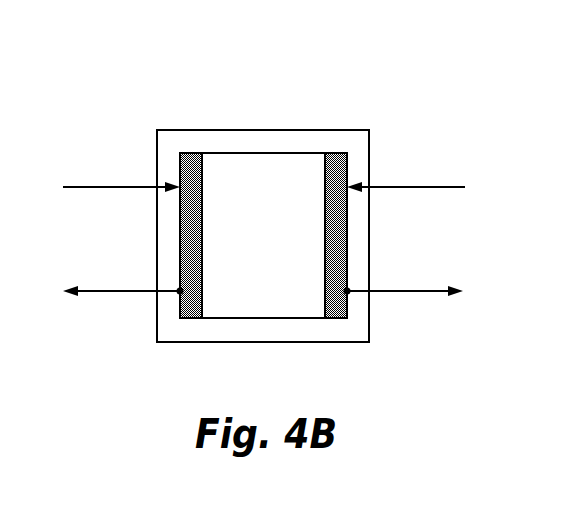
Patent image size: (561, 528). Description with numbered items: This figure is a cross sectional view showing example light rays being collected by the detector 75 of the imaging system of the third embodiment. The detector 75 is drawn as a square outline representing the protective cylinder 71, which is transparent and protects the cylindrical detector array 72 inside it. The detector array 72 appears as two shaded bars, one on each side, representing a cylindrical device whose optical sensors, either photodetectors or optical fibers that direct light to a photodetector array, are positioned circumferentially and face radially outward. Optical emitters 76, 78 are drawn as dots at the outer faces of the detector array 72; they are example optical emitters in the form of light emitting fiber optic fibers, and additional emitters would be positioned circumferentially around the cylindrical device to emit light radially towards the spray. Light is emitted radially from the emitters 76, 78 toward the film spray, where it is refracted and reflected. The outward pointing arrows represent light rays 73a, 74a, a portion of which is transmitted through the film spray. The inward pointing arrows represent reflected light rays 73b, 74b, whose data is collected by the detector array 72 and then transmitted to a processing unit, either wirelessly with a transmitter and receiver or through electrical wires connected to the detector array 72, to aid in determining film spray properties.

The protective cylinder 71 is at (369, 332).
The cylindrical detector array 72 is at (190, 167).
The light ray 73a is at (410, 292).
The light ray 73b is at (416, 186).
The light ray 74a is at (110, 292).
The light ray 74b is at (108, 186).
The detector 75 is at (263, 80).
The optical emitter 76 is at (350, 289).
The optical emitter 78 is at (178, 289).